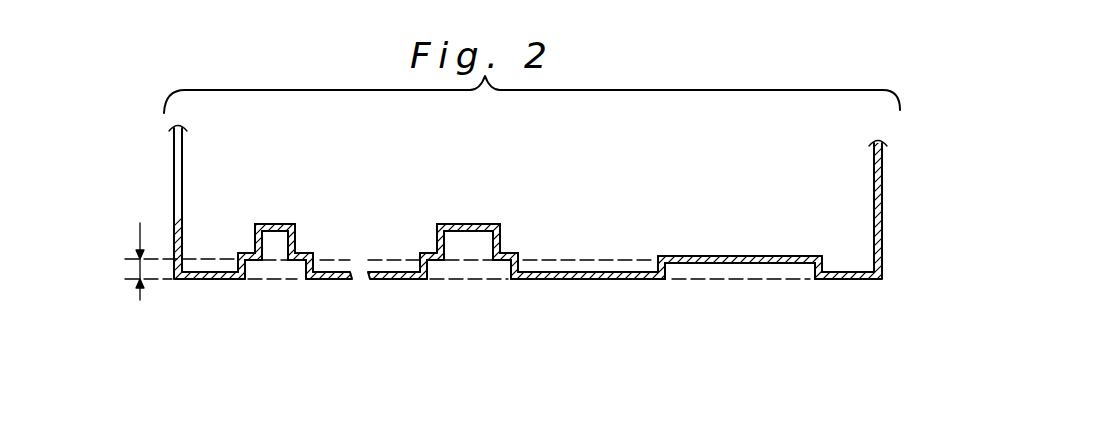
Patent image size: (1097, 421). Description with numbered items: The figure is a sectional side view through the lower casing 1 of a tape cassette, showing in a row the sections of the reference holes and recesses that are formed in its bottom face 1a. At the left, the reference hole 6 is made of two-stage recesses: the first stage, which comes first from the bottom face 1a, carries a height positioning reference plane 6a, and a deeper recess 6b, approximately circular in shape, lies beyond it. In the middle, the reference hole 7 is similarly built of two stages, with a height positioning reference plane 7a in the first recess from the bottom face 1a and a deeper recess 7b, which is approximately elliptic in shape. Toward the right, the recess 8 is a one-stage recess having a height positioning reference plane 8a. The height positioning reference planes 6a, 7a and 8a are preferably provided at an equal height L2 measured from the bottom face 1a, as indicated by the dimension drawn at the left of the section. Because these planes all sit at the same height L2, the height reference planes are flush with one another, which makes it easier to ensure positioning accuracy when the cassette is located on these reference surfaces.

The lower casing 1 is at (882, 224).
The bottom face 1a is at (573, 280).
The reference hole 6 is at (270, 223).
The height positioning reference plane 6a is at (257, 262).
The recess 6b is at (276, 244).
The reference hole 7 is at (471, 224).
The height positioning reference plane 7a is at (440, 261).
The recess 7b is at (483, 245).
The recess 8 is at (705, 255).
The height positioning reference plane 8a is at (773, 264).
The equal height L2 is at (111, 261).